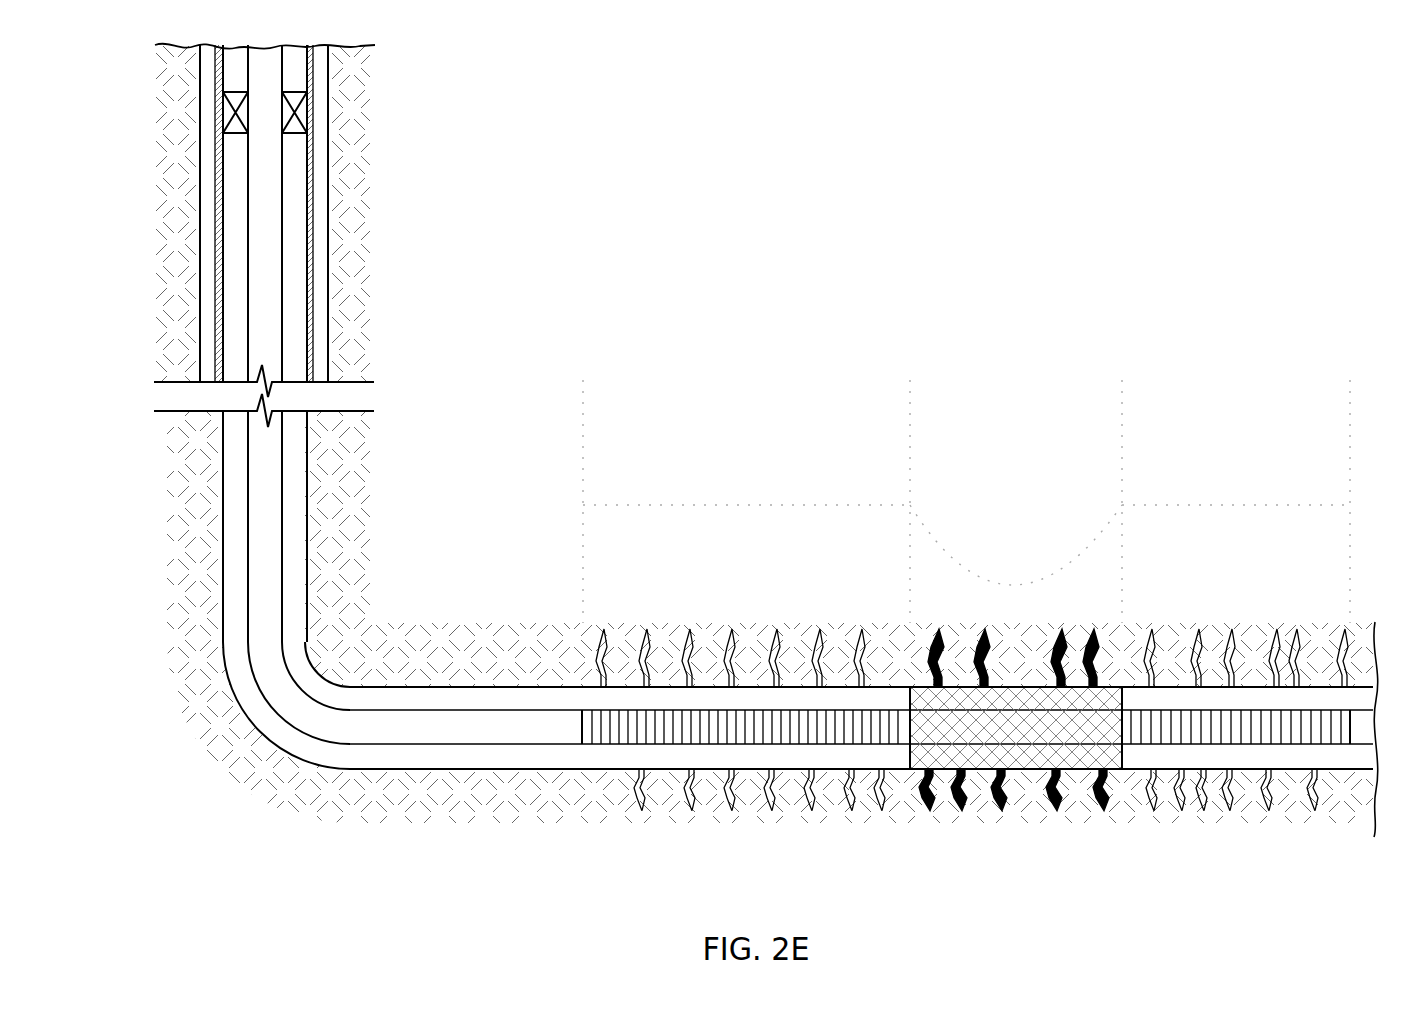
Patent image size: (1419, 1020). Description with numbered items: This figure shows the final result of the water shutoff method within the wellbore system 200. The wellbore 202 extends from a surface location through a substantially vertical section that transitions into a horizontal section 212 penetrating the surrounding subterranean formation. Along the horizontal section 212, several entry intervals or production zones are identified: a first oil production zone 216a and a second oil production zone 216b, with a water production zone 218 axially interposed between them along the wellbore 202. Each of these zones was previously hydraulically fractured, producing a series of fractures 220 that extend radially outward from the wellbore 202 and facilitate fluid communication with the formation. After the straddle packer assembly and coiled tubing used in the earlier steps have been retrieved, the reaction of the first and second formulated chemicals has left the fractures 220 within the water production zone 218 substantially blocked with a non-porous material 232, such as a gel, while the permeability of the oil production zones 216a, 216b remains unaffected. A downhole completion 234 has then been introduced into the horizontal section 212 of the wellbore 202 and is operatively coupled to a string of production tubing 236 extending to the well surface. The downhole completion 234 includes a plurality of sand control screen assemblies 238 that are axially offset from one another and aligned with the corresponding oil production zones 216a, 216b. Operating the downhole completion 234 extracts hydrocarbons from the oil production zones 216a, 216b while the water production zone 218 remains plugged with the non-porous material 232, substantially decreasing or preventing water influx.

The wellbore system 200 is at (562, 292).
The wellbore 202 is at (307, 518).
The horizontal section 212 is at (442, 687).
The first oil production zone 216a is at (745, 507).
The second oil production zone 216b is at (1238, 507).
The water production zone 218 is at (1095, 497).
The fractures 220 is at (1092, 640).
The non-porous material 232 is at (970, 650).
The downhole completion 234 is at (559, 658).
The production tubing 236 is at (283, 586).
The sand control screen assemblies 238 is at (765, 745).